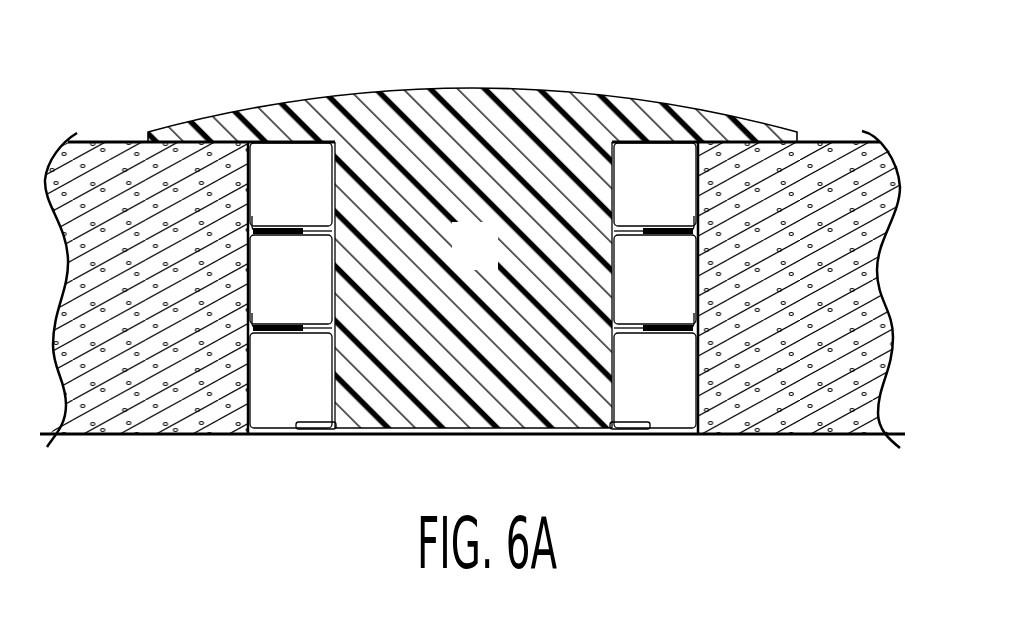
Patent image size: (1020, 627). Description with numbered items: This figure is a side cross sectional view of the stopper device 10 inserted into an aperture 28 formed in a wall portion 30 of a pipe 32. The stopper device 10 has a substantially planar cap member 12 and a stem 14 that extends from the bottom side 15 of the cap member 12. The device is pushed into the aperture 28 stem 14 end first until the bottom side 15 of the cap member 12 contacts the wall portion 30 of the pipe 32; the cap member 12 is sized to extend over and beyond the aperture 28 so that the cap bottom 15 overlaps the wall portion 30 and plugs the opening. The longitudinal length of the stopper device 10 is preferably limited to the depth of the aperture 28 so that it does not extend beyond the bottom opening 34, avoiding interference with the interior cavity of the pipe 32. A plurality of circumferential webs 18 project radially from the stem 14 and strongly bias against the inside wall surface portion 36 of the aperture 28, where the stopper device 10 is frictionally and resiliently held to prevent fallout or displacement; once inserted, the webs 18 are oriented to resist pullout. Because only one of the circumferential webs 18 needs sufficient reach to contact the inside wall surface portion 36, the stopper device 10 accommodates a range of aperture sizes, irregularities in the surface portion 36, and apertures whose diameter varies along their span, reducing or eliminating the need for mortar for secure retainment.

The stopper device 10 is at (487, 265).
The cap member 12 is at (633, 92).
The stem 14 is at (620, 378).
The bottom side of the cap member 15 is at (275, 145).
The circumferential webs 18 is at (302, 232).
The aperture 28 is at (664, 178).
The wall portion 30 is at (822, 168).
The pipe 32 is at (117, 132).
The bottom opening 34 is at (688, 435).
The inside wall surface portion 36 is at (249, 395).